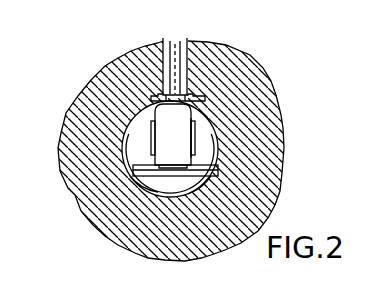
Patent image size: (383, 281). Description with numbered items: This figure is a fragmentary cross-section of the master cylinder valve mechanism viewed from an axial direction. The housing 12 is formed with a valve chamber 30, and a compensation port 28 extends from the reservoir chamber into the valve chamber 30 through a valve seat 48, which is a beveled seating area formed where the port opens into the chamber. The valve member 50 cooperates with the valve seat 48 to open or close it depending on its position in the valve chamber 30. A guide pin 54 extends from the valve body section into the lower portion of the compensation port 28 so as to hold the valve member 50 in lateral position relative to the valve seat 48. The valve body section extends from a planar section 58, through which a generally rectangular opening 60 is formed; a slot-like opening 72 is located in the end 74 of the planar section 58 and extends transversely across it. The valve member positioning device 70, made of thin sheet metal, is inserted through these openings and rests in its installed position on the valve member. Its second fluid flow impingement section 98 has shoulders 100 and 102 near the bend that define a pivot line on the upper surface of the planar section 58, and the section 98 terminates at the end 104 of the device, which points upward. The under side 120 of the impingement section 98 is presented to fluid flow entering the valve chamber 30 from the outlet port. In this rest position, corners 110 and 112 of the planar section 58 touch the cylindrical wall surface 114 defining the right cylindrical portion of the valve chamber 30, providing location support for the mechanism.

The housing 12 is at (274, 175).
The compensation port 28 is at (156, 33).
The valve chamber 30 is at (72, 190).
The valve seat 48 is at (192, 30).
The valve member 50 is at (112, 114).
The guide pin 54 is at (143, 67).
The planar section 58 is at (137, 146).
The rectangular opening 60 is at (182, 113).
The valve member positioning device 70 is at (200, 135).
The slot-like opening 72 is at (186, 178).
The end of planar section 74 is at (150, 188).
The second fluid flow impingement section 98 is at (188, 128).
The shoulder 100 is at (206, 150).
The shoulder 102 is at (127, 164).
The end of positioning device 104 is at (183, 92).
The corner of planar section 110 is at (138, 173).
The corner of planar section 112 is at (236, 186).
The cylindrical wall surface 114 is at (106, 216).
The under side of second impingement section 120 is at (148, 107).